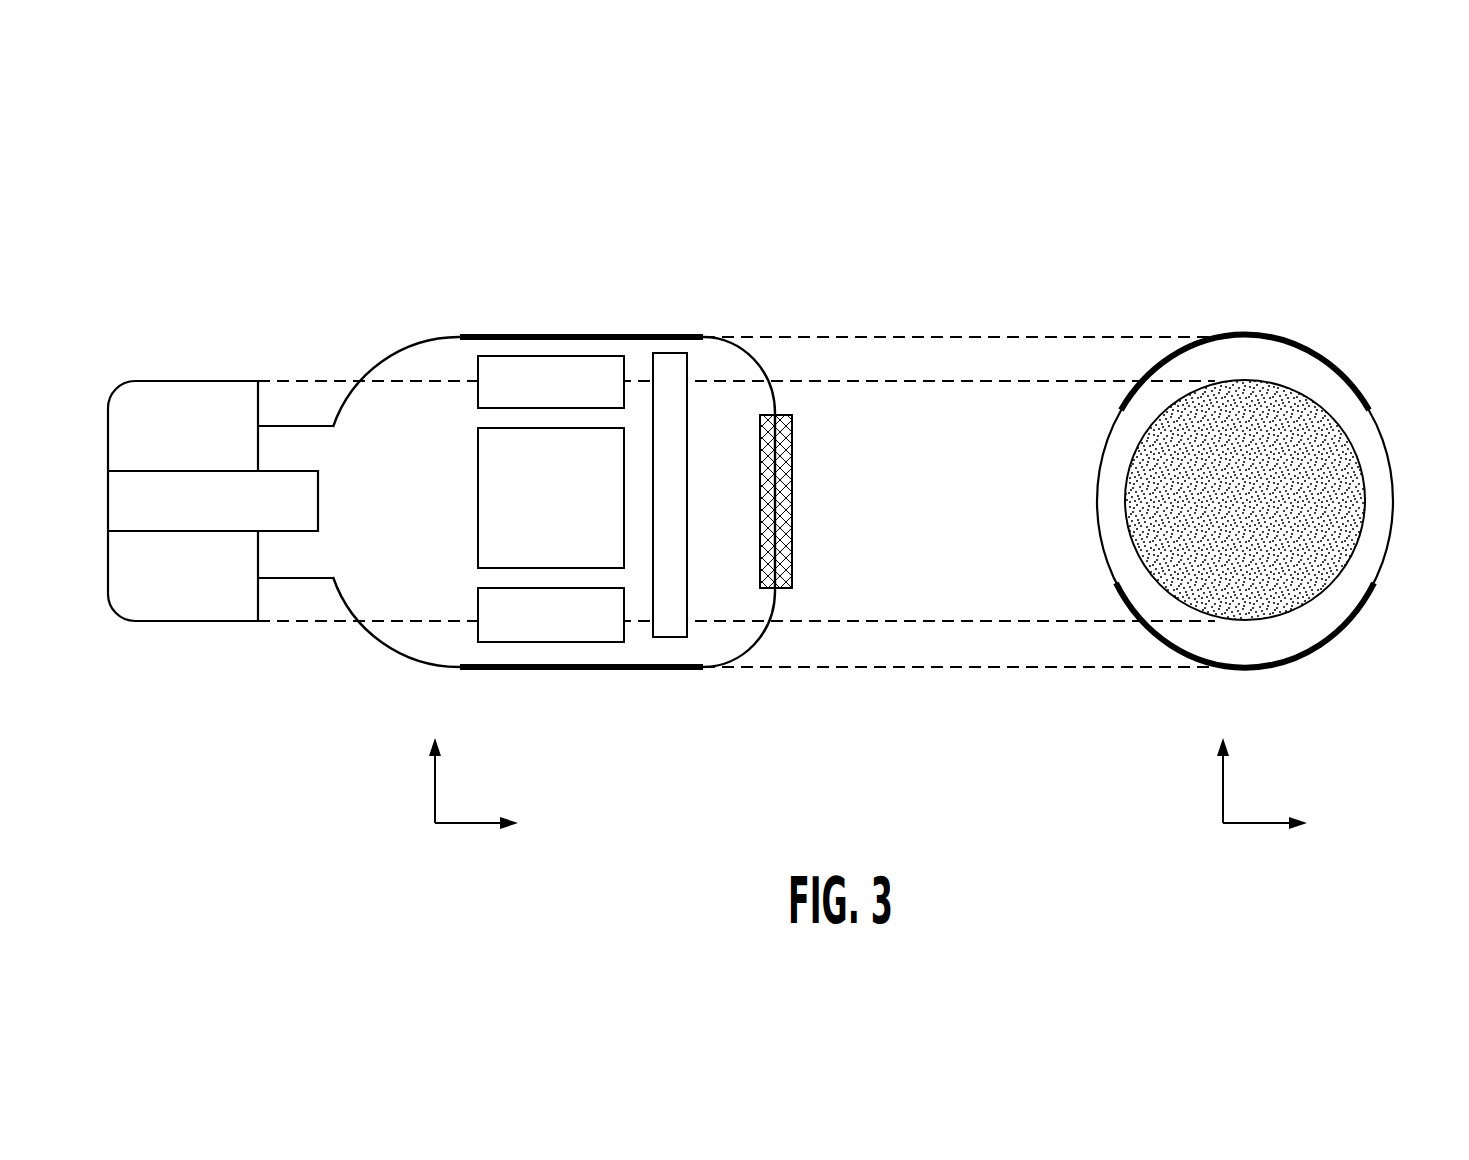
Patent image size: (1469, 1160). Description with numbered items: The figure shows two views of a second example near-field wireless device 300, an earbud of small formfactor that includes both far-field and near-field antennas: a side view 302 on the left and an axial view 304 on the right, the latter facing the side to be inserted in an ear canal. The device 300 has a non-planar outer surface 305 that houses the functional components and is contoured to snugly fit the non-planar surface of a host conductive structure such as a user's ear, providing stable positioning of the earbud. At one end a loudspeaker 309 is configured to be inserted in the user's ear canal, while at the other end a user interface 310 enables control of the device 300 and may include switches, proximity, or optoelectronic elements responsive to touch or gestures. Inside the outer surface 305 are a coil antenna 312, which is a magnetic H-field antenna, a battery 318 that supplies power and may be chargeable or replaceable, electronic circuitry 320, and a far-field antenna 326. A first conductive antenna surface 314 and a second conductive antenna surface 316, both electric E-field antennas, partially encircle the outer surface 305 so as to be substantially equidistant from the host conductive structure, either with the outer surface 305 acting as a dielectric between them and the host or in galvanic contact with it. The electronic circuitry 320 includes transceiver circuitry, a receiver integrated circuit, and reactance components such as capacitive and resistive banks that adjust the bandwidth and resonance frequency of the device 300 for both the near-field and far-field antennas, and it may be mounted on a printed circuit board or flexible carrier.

The near-field wireless device 300 is at (213, 192).
The side view 302 is at (435, 786).
The axial view 304 is at (1223, 786).
The non-planar outer surface 305 is at (408, 348).
The loudspeaker 309 is at (198, 381).
The user interface 310 is at (792, 512).
The coil antenna 312 is at (478, 397).
The first conductive antenna surface 314 is at (567, 337).
The second conductive antenna surface 316 is at (630, 670).
The battery 318 is at (478, 482).
The electronic circuitry 320 is at (687, 447).
The far-field antenna 326 is at (478, 605).